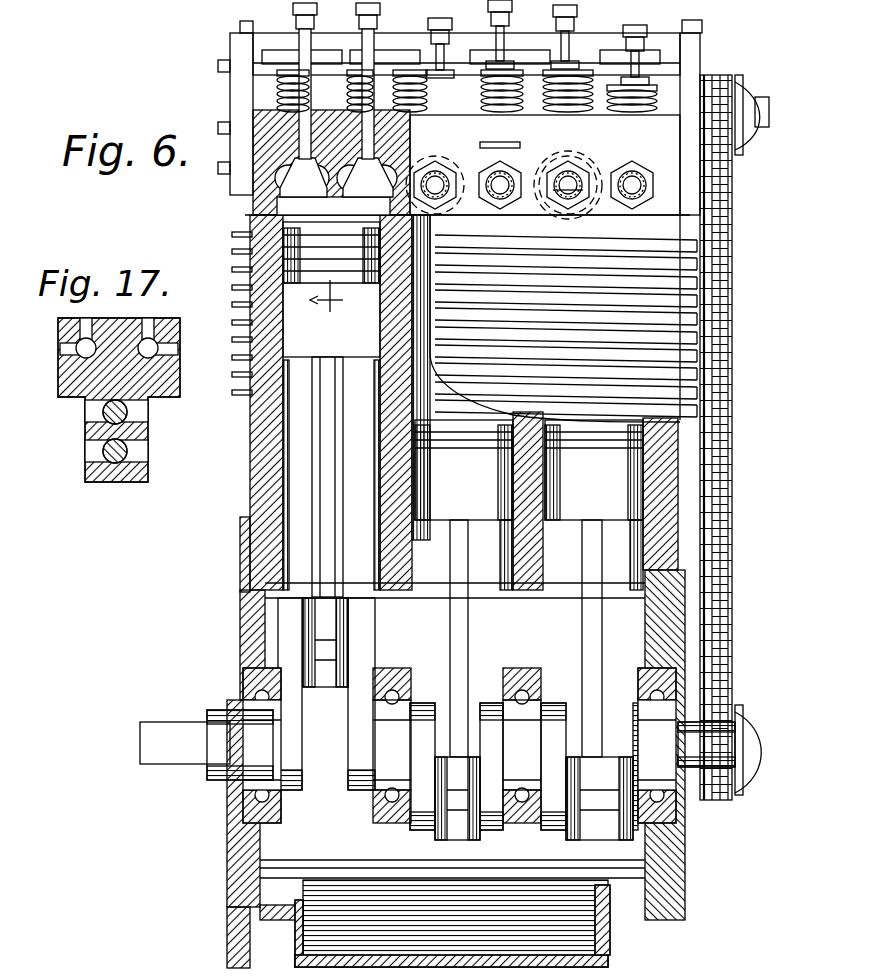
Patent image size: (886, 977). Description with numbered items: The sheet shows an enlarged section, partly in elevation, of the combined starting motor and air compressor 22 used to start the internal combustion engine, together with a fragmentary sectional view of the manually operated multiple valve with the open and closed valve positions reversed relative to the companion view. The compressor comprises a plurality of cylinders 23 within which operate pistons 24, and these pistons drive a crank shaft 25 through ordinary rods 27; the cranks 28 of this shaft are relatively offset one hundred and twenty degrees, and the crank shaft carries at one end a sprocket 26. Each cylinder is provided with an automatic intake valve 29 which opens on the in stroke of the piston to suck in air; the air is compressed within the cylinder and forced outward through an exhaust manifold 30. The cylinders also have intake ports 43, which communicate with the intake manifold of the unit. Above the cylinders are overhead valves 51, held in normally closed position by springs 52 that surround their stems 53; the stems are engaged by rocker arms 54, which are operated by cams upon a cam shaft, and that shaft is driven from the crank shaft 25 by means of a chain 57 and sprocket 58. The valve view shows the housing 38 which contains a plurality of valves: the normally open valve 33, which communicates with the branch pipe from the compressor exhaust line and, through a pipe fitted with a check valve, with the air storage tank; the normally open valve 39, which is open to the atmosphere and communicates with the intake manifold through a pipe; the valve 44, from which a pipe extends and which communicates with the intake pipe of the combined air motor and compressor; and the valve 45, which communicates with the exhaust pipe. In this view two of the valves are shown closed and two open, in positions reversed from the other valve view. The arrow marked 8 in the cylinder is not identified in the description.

In FIG. 6, the piston direction arrow 8 is at (326, 309).
In FIG. 6, the combined starting motor and air compressor 22 is at (262, 458).
In FIG. 6, the cylinders 23 is at (297, 478).
In FIG. 6, the pistons 24 is at (253, 298).
In FIG. 6, the crank shaft 25 is at (250, 752).
In FIG. 6, the sprocket 26 is at (710, 800).
In FIG. 6, the rods 27 is at (327, 535).
In FIG. 6, the cranks 28 is at (363, 620).
In FIG. 6, the automatic intake valve 29 is at (253, 195).
In FIG. 6, the exhaust manifold 30 is at (500, 170).
In FIG. 17, the normally open valve 33 is at (88, 412).
In FIG. 17, the housing 38 is at (73, 393).
In FIG. 17, the normally open valve 39 is at (110, 482).
In FIG. 6, the intake ports 43 is at (555, 190).
In FIG. 17, the valve 44 is at (158, 350).
In FIG. 17, the valve 45 is at (74, 340).
In FIG. 6, the overhead valves 51 is at (331, 164).
In FIG. 6, the springs 52 is at (280, 63).
In FIG. 6, the stems 53 is at (285, 45).
In FIG. 6, the rocker arms 54 is at (362, 32).
In FIG. 6, the chain 57 is at (734, 392).
In FIG. 6, the sprocket 58 is at (732, 77).